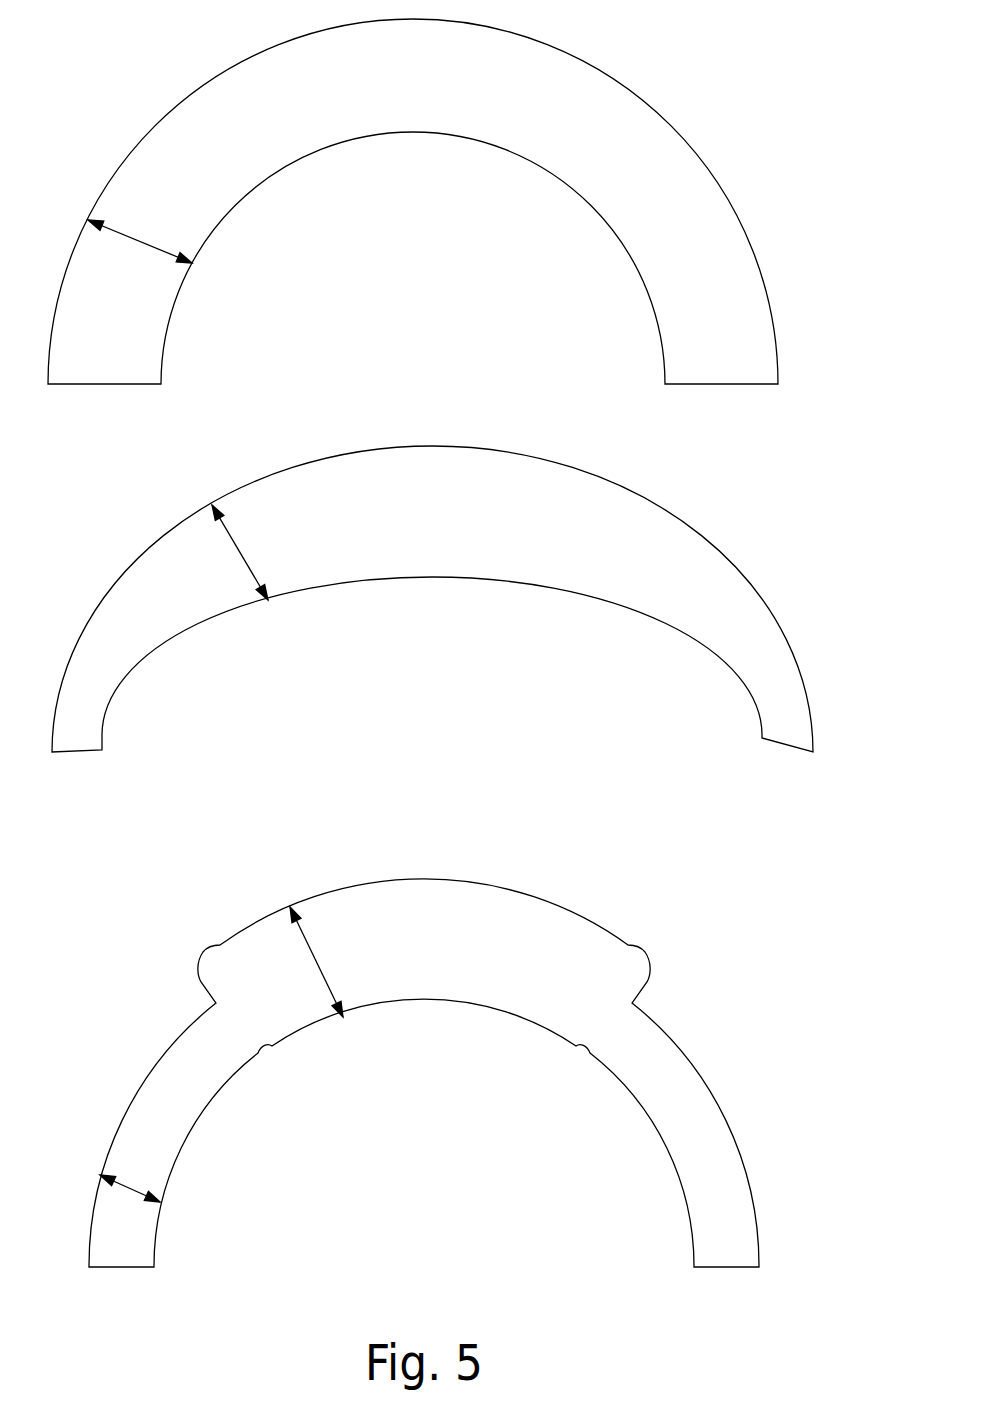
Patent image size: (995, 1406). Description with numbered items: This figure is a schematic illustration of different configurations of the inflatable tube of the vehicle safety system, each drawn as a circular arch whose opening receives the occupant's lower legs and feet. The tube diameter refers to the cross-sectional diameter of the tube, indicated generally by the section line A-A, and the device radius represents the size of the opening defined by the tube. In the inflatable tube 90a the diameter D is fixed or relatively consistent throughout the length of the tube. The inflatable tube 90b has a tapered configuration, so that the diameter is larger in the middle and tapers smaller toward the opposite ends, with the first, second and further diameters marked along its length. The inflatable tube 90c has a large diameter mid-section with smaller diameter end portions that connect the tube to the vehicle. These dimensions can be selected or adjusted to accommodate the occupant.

The inflatable tube 90a is at (718, 147).
The inflatable tube 90b is at (757, 552).
The inflatable tube 90c is at (718, 1007).